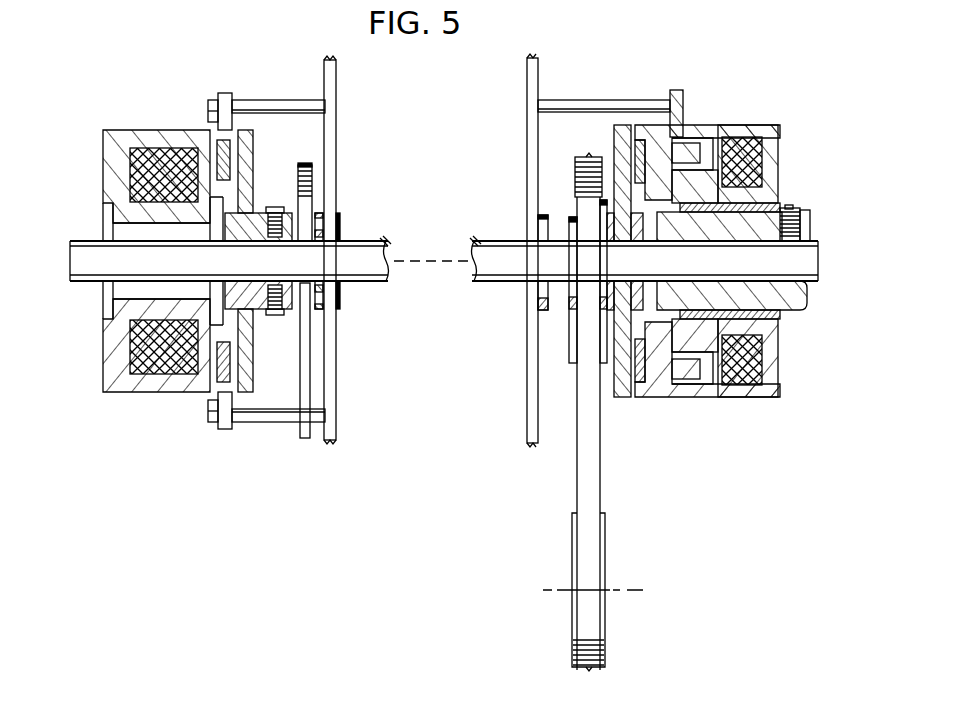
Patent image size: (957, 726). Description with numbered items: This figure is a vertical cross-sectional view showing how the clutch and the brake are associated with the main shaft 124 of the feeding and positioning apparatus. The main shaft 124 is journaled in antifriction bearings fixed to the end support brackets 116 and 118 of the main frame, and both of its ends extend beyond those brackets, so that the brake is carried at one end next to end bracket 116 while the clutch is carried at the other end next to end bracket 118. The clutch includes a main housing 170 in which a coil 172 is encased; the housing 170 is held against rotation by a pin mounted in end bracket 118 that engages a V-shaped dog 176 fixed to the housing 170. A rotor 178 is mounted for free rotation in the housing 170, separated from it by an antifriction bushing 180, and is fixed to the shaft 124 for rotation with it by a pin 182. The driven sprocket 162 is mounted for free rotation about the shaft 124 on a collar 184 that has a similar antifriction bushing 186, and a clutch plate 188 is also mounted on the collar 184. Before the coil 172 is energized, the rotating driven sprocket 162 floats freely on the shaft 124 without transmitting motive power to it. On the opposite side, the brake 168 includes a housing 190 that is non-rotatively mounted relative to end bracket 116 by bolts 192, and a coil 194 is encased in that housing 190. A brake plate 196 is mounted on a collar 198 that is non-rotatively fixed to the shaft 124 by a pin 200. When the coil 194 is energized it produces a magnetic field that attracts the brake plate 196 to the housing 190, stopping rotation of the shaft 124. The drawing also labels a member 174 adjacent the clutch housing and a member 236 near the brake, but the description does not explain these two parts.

The end support bracket 116 is at (337, 430).
The end support bracket 118 is at (527, 410).
The main shaft 124 is at (486, 241).
The driven sprocket 162 is at (578, 173).
The brake 168 is at (136, 114).
The main housing 170 is at (775, 156).
The coil 172 is at (745, 129).
The mounting plate 174 is at (630, 101).
The V-shaped dog 176 is at (684, 98).
The rotor 178 is at (808, 295).
The antifriction bushing 180 is at (780, 204).
The pin 182 is at (798, 209).
The collar 184 is at (618, 294).
The antifriction bushing 186 is at (651, 281).
The clutch plate 188 is at (615, 137).
The housing 190 is at (103, 155).
The bolts 192 is at (276, 101).
The coil 194 is at (158, 147).
The brake plate 196 is at (254, 142).
The collar 198 is at (257, 213).
The pin 200 is at (271, 213).
The bracket 236 is at (308, 334).